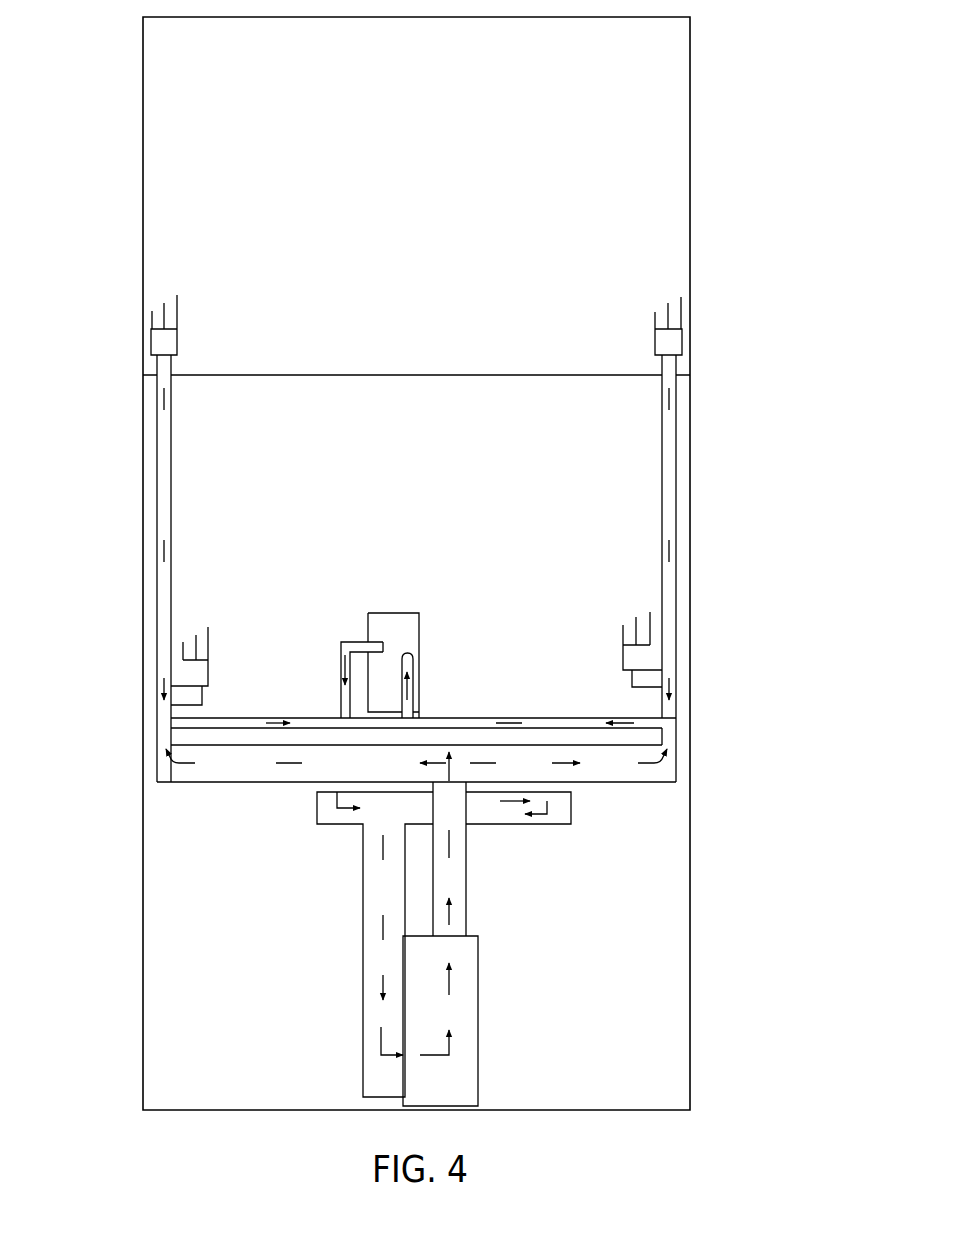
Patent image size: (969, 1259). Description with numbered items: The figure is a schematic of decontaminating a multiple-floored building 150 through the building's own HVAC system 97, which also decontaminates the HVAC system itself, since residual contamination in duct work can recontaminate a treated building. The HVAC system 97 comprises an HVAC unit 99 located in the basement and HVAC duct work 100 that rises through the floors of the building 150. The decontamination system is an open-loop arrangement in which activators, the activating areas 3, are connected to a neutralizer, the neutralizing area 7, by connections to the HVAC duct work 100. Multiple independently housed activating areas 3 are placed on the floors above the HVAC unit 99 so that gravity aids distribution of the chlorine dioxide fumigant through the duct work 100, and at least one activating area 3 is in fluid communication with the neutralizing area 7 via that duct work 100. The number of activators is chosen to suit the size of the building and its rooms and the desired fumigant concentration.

The building 150 is at (716, 175).
The HVAC duct work 100 is at (158, 512).
The activating area 3 is at (151, 340).
The neutralizing area 7 is at (408, 633).
The HVAC system 97 is at (500, 870).
The HVAC unit 99 is at (468, 996).